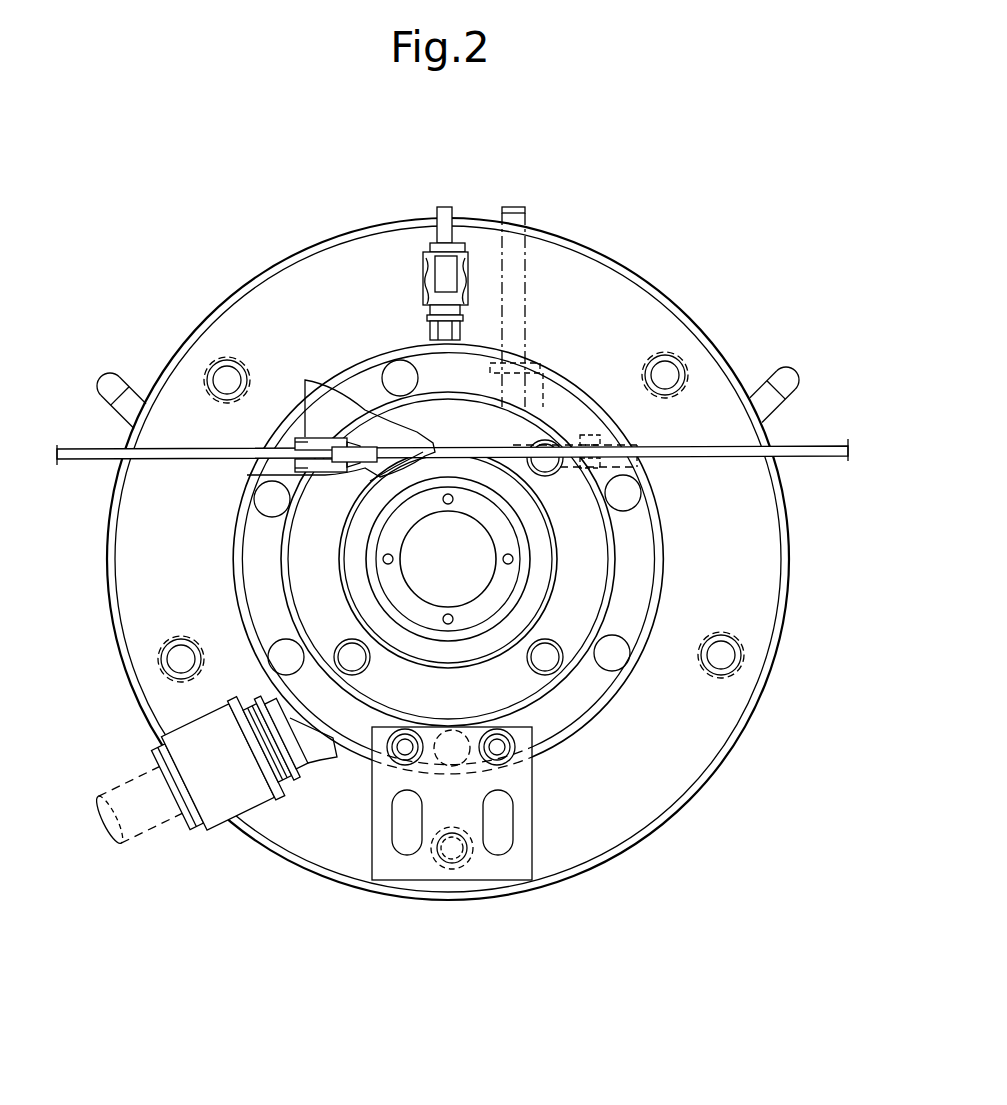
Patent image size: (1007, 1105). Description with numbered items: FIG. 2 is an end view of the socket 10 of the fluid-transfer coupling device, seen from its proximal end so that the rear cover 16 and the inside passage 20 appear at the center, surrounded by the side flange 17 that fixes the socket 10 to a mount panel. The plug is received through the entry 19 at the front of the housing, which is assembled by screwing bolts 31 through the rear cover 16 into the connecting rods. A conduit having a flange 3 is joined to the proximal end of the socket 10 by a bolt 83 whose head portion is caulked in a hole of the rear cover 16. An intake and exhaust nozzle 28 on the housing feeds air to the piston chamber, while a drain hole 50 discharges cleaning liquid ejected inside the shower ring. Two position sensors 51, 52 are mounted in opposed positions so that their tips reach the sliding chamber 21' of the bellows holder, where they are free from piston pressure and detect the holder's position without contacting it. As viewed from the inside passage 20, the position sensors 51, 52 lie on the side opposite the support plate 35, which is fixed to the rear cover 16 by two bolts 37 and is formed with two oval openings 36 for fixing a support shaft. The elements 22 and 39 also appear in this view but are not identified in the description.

The socket 10 is at (736, 170).
The intake and exhaust nozzle 28 is at (426, 270).
The sliding chamber of the bellows holder 21' is at (341, 313).
The entry 19 is at (222, 380).
The rear cover 16 is at (567, 415).
The position sensor 51 is at (105, 453).
The position sensor 52 is at (847, 447).
The flange 3 is at (592, 532).
The hub 22 is at (543, 562).
The inside passage 20 is at (432, 575).
The bolts 31 is at (270, 495).
The bolt 83 is at (553, 662).
The bolts 37 is at (500, 745).
The drain hole 50 is at (213, 820).
The small hole 39 is at (427, 618).
The support plate 35 is at (495, 870).
The oval openings 36 is at (513, 820).
The side flange 17 is at (593, 850).